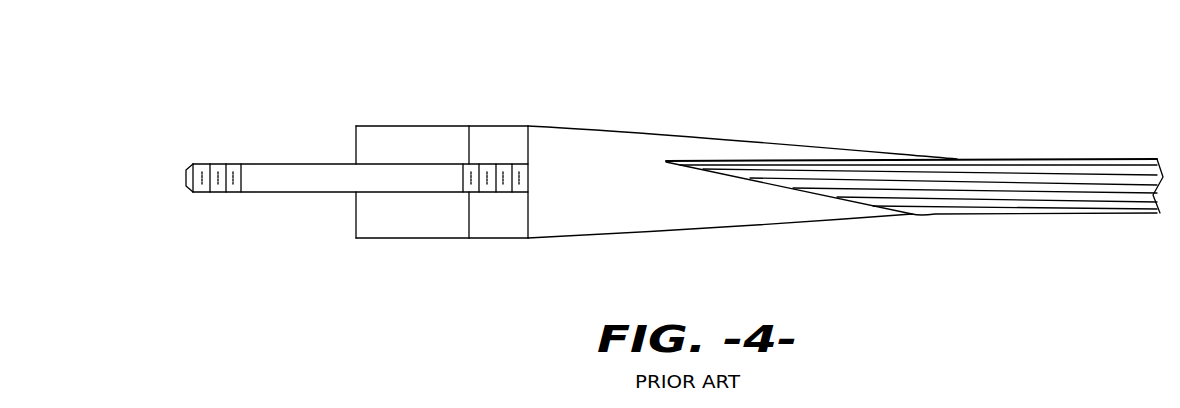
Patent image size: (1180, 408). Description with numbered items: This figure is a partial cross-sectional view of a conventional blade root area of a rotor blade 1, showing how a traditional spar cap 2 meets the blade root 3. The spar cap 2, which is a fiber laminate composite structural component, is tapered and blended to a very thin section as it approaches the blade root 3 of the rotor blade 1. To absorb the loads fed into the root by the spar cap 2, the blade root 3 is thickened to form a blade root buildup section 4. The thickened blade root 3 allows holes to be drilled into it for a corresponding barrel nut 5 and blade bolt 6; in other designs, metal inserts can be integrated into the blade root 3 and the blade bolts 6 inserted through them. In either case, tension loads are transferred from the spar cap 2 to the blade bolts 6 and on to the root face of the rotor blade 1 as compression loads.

The rotor blade 1 is at (1089, 104).
The spar cap 2 is at (1023, 216).
The blade root 3 is at (564, 120).
The blade root buildup section 4 is at (652, 205).
The barrel nut 5 is at (503, 218).
The blade bolt 6 is at (303, 182).